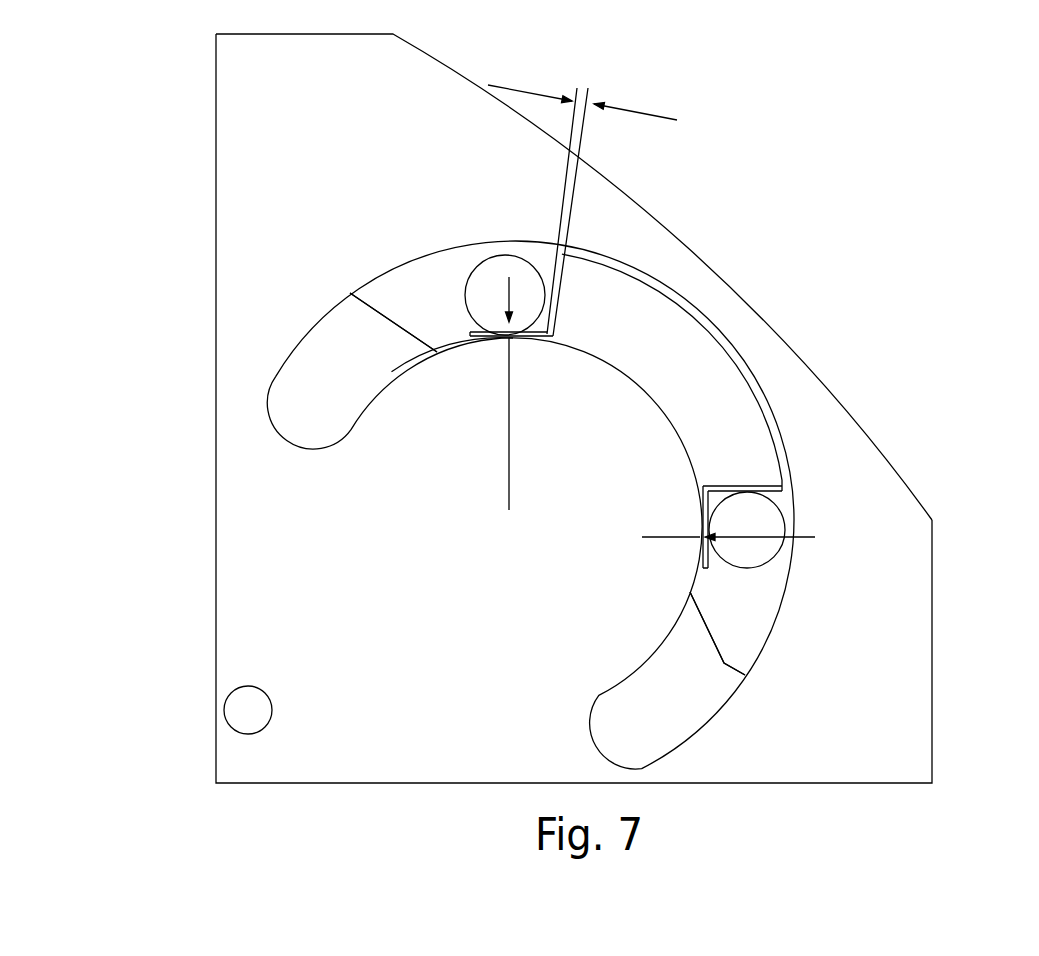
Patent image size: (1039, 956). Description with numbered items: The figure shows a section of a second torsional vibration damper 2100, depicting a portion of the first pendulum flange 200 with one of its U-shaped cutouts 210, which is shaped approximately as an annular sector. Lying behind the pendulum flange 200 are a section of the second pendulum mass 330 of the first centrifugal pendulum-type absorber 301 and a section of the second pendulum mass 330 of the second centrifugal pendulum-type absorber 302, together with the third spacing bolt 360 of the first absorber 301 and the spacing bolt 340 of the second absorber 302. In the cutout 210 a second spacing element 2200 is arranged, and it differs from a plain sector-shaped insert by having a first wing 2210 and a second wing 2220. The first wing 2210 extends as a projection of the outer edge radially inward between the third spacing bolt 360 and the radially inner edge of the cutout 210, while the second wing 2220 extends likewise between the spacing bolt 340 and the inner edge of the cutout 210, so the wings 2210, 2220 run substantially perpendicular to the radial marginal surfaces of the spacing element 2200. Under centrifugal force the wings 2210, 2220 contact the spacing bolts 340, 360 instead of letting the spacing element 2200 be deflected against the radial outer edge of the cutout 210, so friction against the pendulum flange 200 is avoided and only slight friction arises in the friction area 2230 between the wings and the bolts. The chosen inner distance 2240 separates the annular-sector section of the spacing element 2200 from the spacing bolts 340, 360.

The first pendulum flange 200 is at (820, 763).
The second torsional vibration damper 2100 is at (955, 215).
The U-shaped cutout 210 is at (628, 757).
The first wing 2210 is at (473, 316).
The first centrifugal pendulum-type absorber 301 is at (385, 293).
The second centrifugal pendulum-type absorber 302 is at (745, 648).
The second pendulum mass 330 is at (440, 433).
The third spacing bolt 360 is at (490, 272).
The spacing bolt 340 is at (768, 525).
The second spacing element 2200 is at (697, 350).
The friction area 2230 is at (520, 338).
The second wing 2220 is at (707, 535).
The inner distance 2240 is at (597, 100).